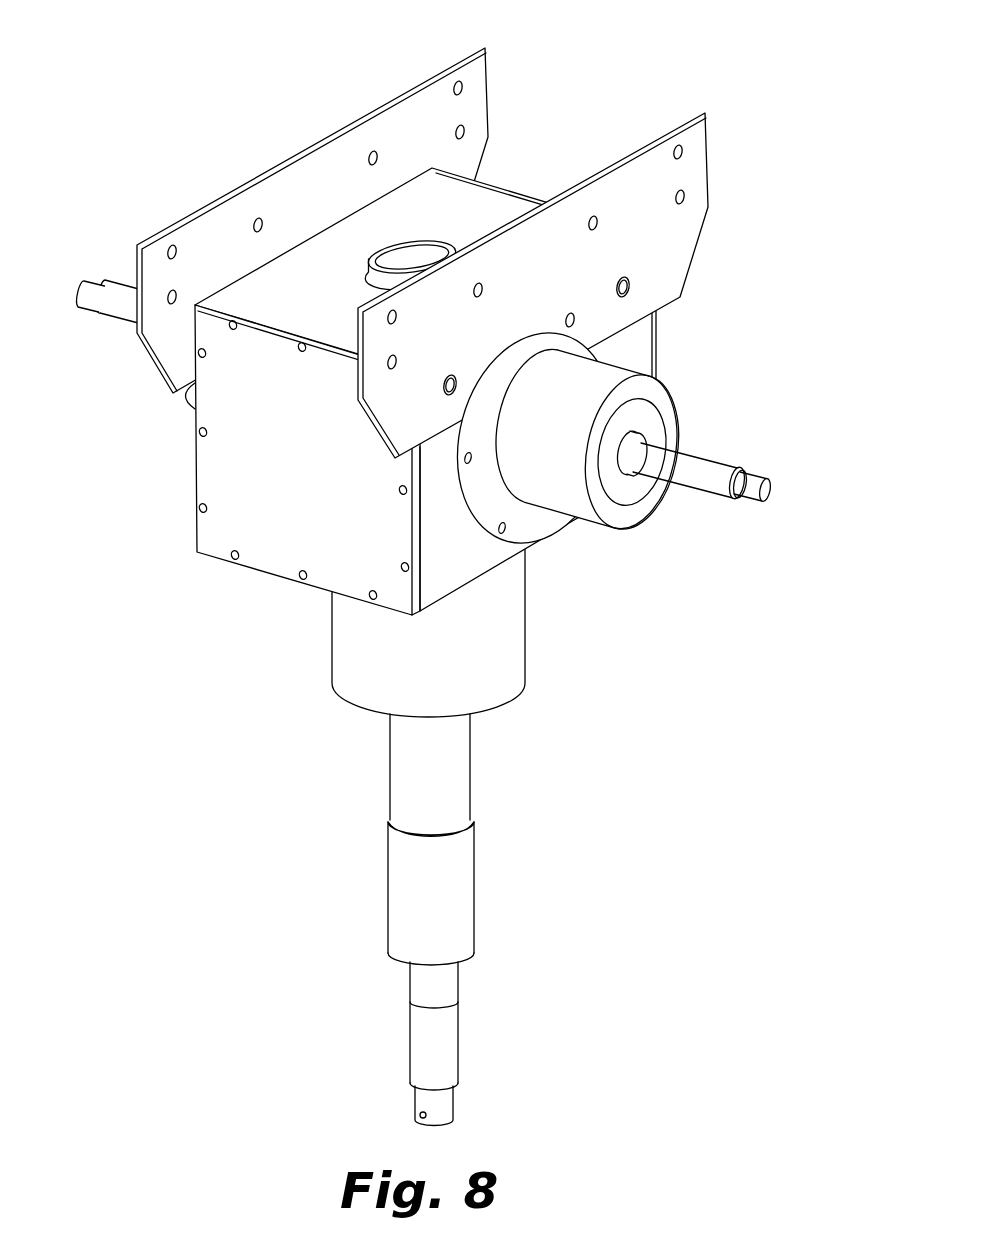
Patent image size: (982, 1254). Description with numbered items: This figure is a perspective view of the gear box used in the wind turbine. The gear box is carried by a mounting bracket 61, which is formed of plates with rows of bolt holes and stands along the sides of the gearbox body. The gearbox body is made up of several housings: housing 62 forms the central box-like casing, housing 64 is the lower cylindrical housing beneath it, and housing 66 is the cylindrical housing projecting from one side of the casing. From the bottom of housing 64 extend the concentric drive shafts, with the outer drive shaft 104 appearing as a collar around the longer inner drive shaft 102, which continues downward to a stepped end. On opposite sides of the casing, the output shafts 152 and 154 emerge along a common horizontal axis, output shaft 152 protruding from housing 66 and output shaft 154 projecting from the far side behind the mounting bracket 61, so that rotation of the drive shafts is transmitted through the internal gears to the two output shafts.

The mounting bracket 61 is at (693, 150).
The housing 62 is at (460, 560).
The housing 64 is at (358, 652).
The housing 66 is at (597, 377).
The inner drive shaft 102 is at (448, 1052).
The outer drive shaft 104 is at (455, 897).
The output shaft 152 is at (727, 453).
The output shaft 154 is at (118, 281).